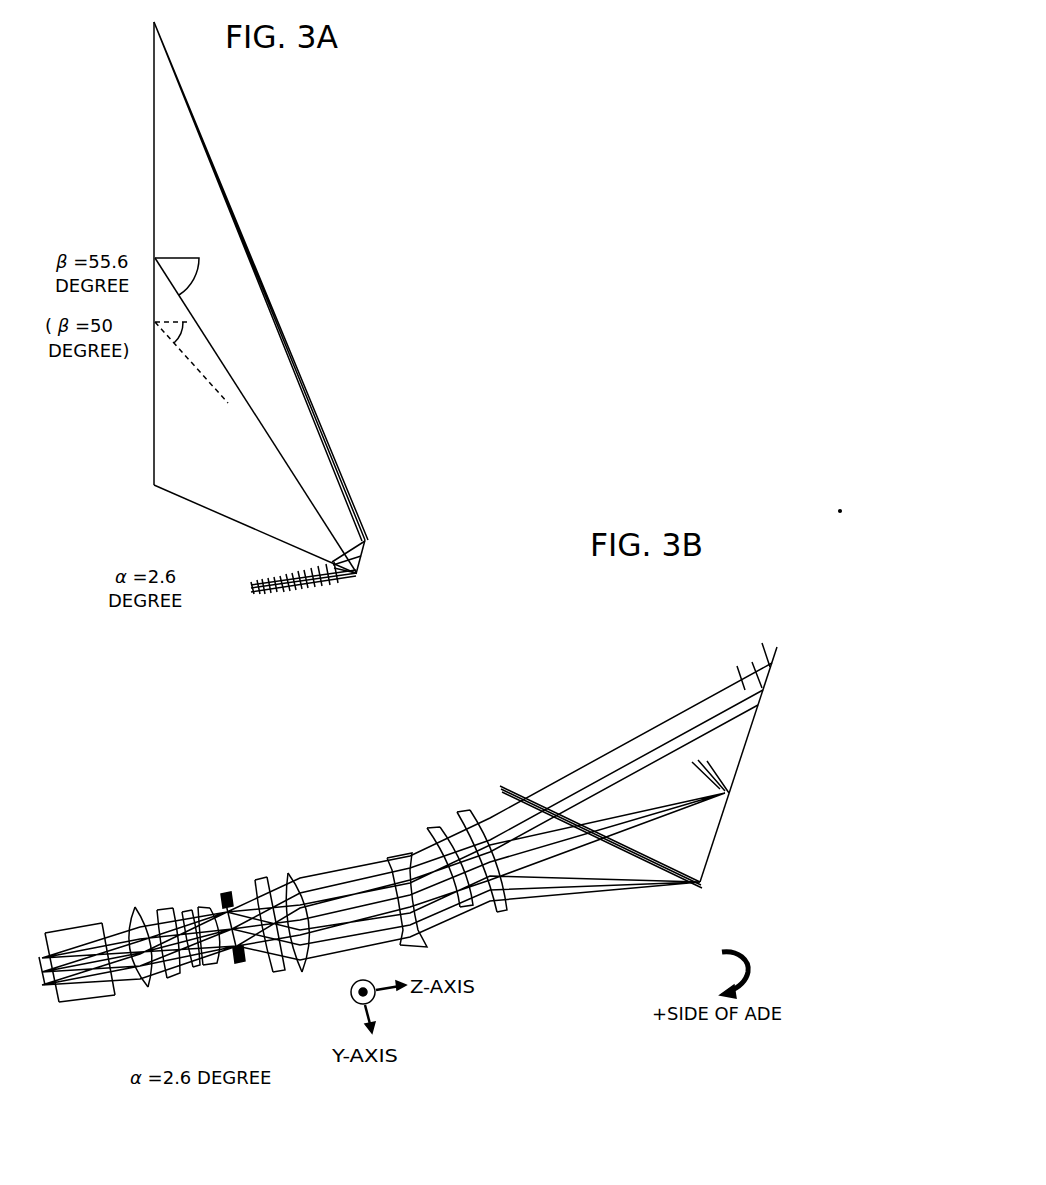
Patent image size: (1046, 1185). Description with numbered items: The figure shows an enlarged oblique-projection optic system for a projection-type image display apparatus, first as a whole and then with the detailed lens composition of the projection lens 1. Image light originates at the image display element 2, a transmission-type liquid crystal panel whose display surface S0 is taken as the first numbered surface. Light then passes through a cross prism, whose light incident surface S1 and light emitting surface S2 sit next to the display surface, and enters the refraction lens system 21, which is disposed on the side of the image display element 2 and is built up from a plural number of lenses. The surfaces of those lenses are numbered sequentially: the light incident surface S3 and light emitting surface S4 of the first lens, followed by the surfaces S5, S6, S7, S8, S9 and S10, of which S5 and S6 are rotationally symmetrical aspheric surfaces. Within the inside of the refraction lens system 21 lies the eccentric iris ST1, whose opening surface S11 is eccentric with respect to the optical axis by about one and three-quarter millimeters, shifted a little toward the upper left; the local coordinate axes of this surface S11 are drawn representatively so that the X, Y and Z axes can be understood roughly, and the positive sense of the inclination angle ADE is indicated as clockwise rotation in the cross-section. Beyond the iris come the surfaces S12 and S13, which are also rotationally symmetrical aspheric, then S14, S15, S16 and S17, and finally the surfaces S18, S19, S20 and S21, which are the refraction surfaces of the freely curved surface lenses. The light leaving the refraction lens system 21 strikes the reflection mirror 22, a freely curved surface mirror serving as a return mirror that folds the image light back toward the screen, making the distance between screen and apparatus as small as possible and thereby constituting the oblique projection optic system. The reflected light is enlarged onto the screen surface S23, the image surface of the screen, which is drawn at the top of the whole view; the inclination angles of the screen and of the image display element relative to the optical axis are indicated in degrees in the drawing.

In FIG. 3A, the projection lens 1 is at (325, 599).
In FIG. 3B, the projection lens 1 is at (782, 592).
In FIG. 3A, the image display element 2 is at (253, 588).
In FIG. 3B, the image display element 2 is at (79, 974).
In FIG. 3B, the refraction lens system 21 is at (527, 742).
In FIG. 3A, the reflection mirror 22 is at (378, 564).
In FIG. 3B, the reflection mirror 22 is at (776, 645).
In FIG. 3B, the display surface S0 is at (43, 992).
In FIG. 3B, the light incident surface of cross prism S1 is at (58, 1005).
In FIG. 3B, the light emitting surface of cross prism S2 is at (114, 998).
In FIG. 3B, the light incident surface of first lens S3 is at (128, 918).
In FIG. 3B, the light emitting surface of first lens S4 is at (146, 905).
In FIG. 3B, the lens surface S5 is at (160, 916).
In FIG. 3B, the lens surface S6 is at (175, 905).
In FIG. 3B, the lens surface S7 is at (185, 912).
In FIG. 3B, the lens surface S8 is at (193, 908).
In FIG. 3B, the lens surface S9 is at (203, 910).
In FIG. 3B, the lens surface S10 is at (216, 906).
In FIG. 3B, the surface of eccentric iris S11 is at (238, 963).
In FIG. 3B, the lens surface S12 is at (258, 880).
In FIG. 3B, the lens surface S13 is at (268, 876).
In FIG. 3B, the lens surface S14 is at (290, 872).
In FIG. 3B, the lens surface S15 is at (310, 902).
In FIG. 3B, the lens surface S16 is at (394, 860).
In FIG. 3B, the lens surface S17 is at (412, 853).
In FIG. 3B, the freely curved surface lens refraction surface S18 is at (432, 832).
In FIG. 3B, the freely curved surface lens refraction surface S19 is at (441, 826).
In FIG. 3B, the freely curved surface lens refraction surface S20 is at (461, 812).
In FIG. 3B, the freely curved surface lens refraction surface S21 is at (472, 809).
In FIG. 3A, the screen surface S23 is at (152, 438).
In FIG. 3A, the eccentric iris ST1 is at (282, 588).
In FIG. 3B, the eccentric iris ST1 is at (295, 909).